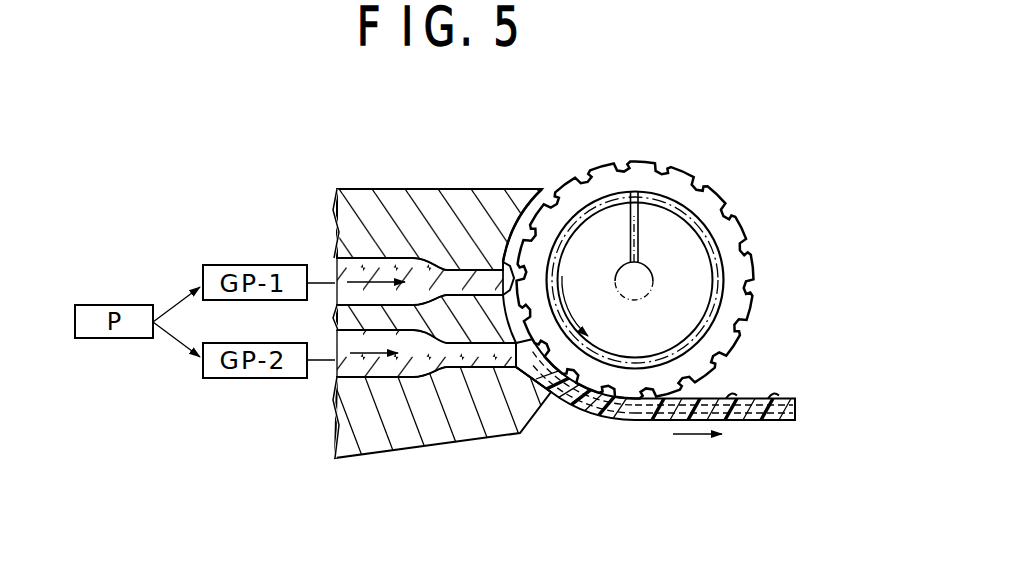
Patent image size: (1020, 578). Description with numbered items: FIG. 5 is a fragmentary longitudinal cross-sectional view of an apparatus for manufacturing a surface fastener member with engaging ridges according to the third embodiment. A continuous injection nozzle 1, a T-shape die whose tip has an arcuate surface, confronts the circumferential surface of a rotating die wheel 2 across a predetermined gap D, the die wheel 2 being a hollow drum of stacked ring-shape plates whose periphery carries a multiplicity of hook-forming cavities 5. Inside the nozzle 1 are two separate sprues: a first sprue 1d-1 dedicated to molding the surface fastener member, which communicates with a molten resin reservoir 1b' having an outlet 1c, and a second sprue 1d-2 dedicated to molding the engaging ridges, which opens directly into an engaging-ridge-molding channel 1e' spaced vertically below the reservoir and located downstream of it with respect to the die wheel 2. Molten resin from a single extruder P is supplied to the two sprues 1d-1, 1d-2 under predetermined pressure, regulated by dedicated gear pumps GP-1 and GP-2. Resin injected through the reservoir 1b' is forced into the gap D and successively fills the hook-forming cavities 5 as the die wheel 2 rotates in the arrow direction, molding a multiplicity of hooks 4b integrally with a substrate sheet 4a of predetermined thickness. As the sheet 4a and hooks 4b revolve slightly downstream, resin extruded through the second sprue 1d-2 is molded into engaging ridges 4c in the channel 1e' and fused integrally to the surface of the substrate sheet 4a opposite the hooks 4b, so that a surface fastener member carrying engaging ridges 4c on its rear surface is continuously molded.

The injection nozzle 1 is at (424, 212).
The first sprue 1d-1 is at (380, 263).
The second sprue 1d-2 is at (380, 371).
The outlet 1c is at (485, 272).
The molten resin reservoir 1b' is at (511, 209).
The gap D is at (534, 186).
The engaging-ridge-molding channel 1e' is at (528, 417).
The die wheel 2 is at (708, 203).
The hook-forming cavities 5 is at (750, 292).
The substrate sheet 4a is at (785, 396).
The hooks 4b is at (772, 392).
The engaging ridges 4c is at (748, 425).